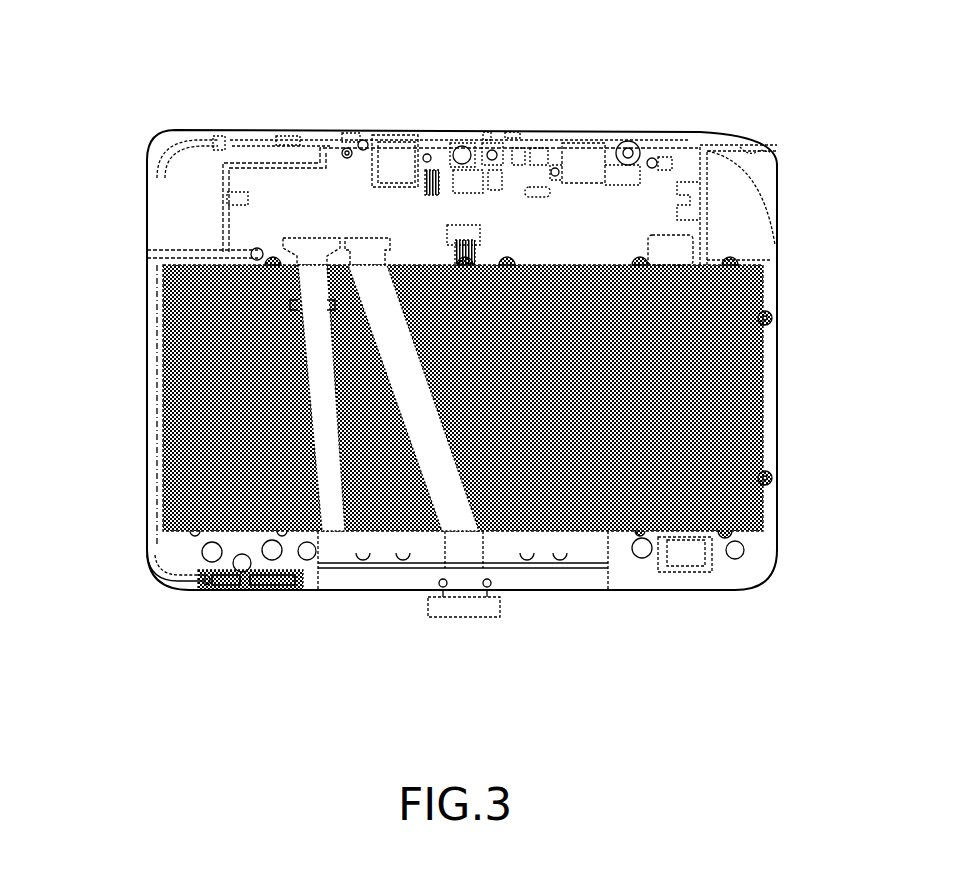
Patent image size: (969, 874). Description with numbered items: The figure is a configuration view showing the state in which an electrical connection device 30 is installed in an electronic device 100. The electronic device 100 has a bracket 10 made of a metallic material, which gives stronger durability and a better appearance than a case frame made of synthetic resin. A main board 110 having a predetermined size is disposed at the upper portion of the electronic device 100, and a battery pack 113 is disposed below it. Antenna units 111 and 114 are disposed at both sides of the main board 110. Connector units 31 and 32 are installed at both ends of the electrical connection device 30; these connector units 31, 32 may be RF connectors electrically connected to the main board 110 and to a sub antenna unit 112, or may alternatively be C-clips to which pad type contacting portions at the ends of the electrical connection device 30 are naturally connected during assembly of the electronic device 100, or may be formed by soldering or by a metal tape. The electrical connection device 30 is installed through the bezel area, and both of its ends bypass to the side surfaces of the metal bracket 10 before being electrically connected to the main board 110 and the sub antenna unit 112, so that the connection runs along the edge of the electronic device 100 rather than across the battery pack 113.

The electronic device 100 is at (797, 123).
The bracket 10 is at (642, 572).
The main board 110 is at (338, 172).
The antenna unit 111 is at (162, 172).
The sub antenna unit 112 is at (270, 592).
The battery pack 113 is at (728, 402).
The antenna unit 114 is at (752, 192).
The electrical connection device 30 is at (150, 572).
The connector unit 31 is at (205, 588).
The connector unit 32 is at (252, 250).